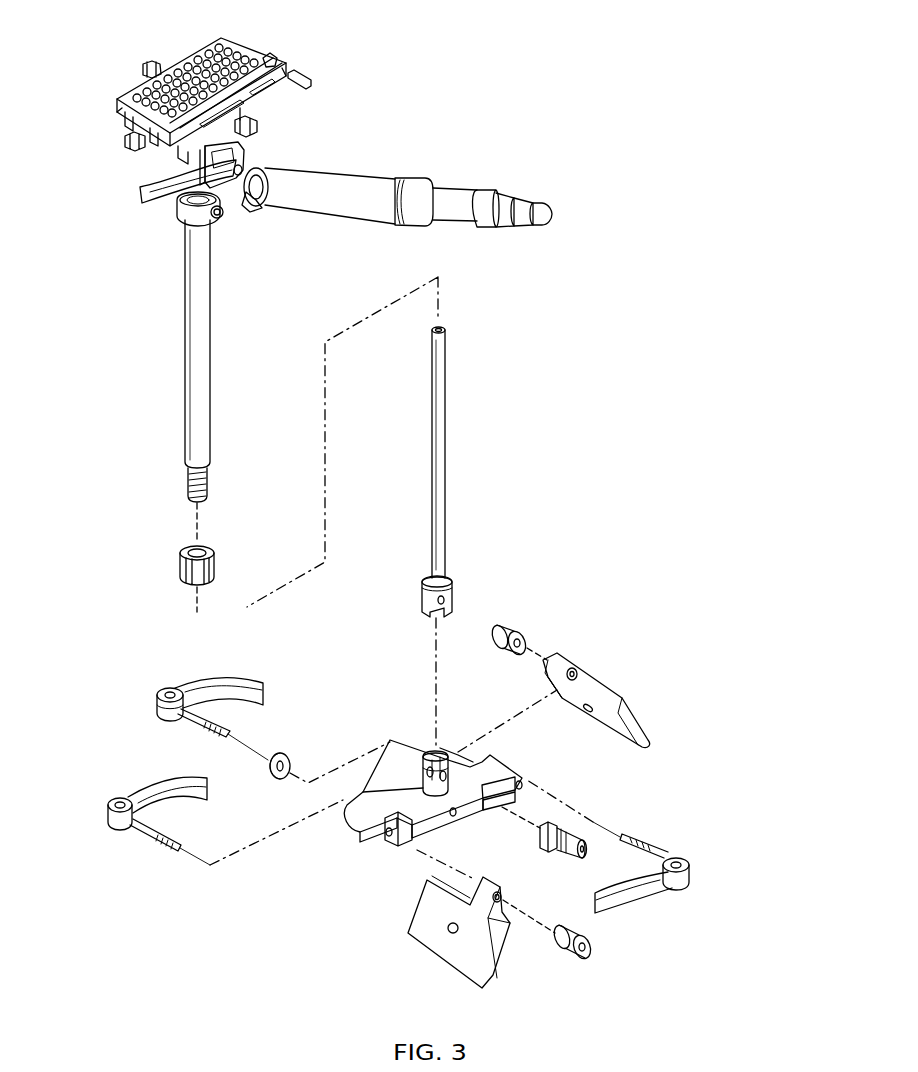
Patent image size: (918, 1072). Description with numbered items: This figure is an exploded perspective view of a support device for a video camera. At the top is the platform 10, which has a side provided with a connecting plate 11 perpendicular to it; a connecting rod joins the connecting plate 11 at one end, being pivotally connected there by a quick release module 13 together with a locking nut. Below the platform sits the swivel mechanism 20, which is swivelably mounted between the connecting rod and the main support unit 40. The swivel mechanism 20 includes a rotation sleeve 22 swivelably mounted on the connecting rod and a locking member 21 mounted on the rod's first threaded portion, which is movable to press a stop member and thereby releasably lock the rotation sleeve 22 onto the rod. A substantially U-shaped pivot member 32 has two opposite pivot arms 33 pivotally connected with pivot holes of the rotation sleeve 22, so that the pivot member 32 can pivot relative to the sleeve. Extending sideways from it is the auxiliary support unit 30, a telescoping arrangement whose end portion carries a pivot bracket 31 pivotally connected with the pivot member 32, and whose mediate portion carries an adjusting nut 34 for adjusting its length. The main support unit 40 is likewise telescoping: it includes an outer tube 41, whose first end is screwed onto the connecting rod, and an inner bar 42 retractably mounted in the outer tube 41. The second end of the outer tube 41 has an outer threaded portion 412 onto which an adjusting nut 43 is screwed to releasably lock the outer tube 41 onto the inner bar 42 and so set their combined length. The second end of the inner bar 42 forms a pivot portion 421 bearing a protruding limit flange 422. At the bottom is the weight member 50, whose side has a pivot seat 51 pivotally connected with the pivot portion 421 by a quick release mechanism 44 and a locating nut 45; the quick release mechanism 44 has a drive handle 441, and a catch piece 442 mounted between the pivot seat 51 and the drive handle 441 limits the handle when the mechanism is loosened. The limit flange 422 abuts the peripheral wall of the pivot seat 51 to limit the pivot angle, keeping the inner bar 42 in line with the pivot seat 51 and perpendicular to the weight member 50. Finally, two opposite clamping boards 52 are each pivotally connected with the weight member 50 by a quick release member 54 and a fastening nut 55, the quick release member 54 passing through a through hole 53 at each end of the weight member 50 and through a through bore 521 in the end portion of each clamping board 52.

The platform 10 is at (266, 42).
The connecting plate 11 is at (182, 151).
The quick release module 13 is at (240, 168).
The swivel mechanism 20 is at (178, 229).
The locking member 21 is at (140, 200).
The rotation sleeve 22 is at (178, 208).
The auxiliary support unit 30 is at (373, 168).
The pivot bracket 31 is at (252, 200).
The pivot member 32 is at (241, 177).
The pivot arms 33 is at (226, 213).
The adjusting nut 34 is at (432, 188).
The main support unit 40 is at (434, 566).
The outer tube 41 is at (203, 390).
The outer threaded portion 412 is at (187, 477).
The inner bar 42 is at (443, 452).
The pivot portion 421 is at (424, 595).
The limit flange 422 is at (453, 610).
The adjusting nut 43 is at (212, 548).
The quick release mechanism 44 is at (160, 695).
The drive handle 441 is at (216, 692).
The catch piece 442 is at (283, 755).
The locating nut 45 is at (540, 838).
The weight member 50 is at (478, 789).
The pivot seat 51 is at (434, 750).
The clamping boards 52 is at (628, 675).
The through bore 521 is at (572, 670).
The through hole 53 is at (530, 775).
The quick release member 54 is at (118, 800).
The fastening nut 55 is at (508, 626).